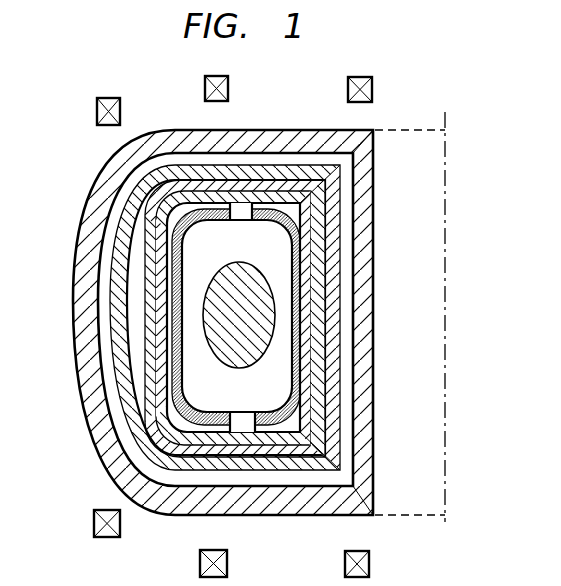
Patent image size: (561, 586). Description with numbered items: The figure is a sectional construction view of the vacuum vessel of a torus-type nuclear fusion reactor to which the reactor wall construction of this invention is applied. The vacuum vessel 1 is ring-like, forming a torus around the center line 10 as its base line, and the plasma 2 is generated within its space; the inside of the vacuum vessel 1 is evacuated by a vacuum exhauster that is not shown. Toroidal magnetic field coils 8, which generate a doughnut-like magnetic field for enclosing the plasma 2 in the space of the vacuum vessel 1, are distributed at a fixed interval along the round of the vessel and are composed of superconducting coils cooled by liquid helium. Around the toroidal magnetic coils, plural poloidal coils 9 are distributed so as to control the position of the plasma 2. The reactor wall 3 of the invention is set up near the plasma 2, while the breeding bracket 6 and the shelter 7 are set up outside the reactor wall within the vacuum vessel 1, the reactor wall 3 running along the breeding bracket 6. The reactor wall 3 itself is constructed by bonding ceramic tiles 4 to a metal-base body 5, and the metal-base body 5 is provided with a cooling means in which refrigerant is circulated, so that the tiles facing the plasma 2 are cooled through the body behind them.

The vacuum vessel 1 is at (110, 329).
The plasma 2 is at (242, 367).
The reactor wall 3 is at (178, 312).
The ceramic tiles 4 is at (188, 260).
The metal-base body 5 is at (172, 369).
The breeding bracket 6 is at (143, 282).
The shelter 7 is at (102, 233).
The toroidal magnetic field coils 8 is at (86, 399).
The poloidal coils 9 is at (373, 91).
The center line 10 is at (447, 460).